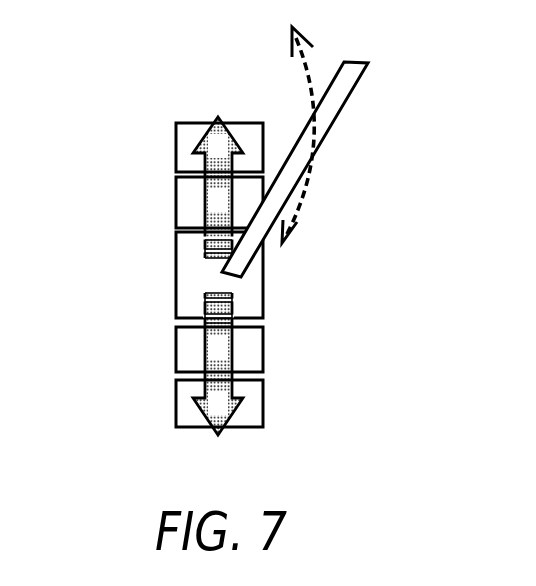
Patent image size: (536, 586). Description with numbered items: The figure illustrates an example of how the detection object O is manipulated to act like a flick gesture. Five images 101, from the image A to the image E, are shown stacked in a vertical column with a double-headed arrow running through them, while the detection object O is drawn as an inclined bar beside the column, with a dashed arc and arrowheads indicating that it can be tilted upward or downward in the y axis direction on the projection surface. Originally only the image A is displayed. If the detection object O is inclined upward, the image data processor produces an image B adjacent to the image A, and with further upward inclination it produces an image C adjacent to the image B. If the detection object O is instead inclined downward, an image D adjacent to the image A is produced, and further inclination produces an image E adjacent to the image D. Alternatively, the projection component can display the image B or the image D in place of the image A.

The images 101 is at (160, 276).
The image A is at (219, 275).
The image B is at (219, 202).
The image C is at (219, 147).
The image D is at (219, 349).
The image E is at (219, 403).
The detection object O is at (364, 70).